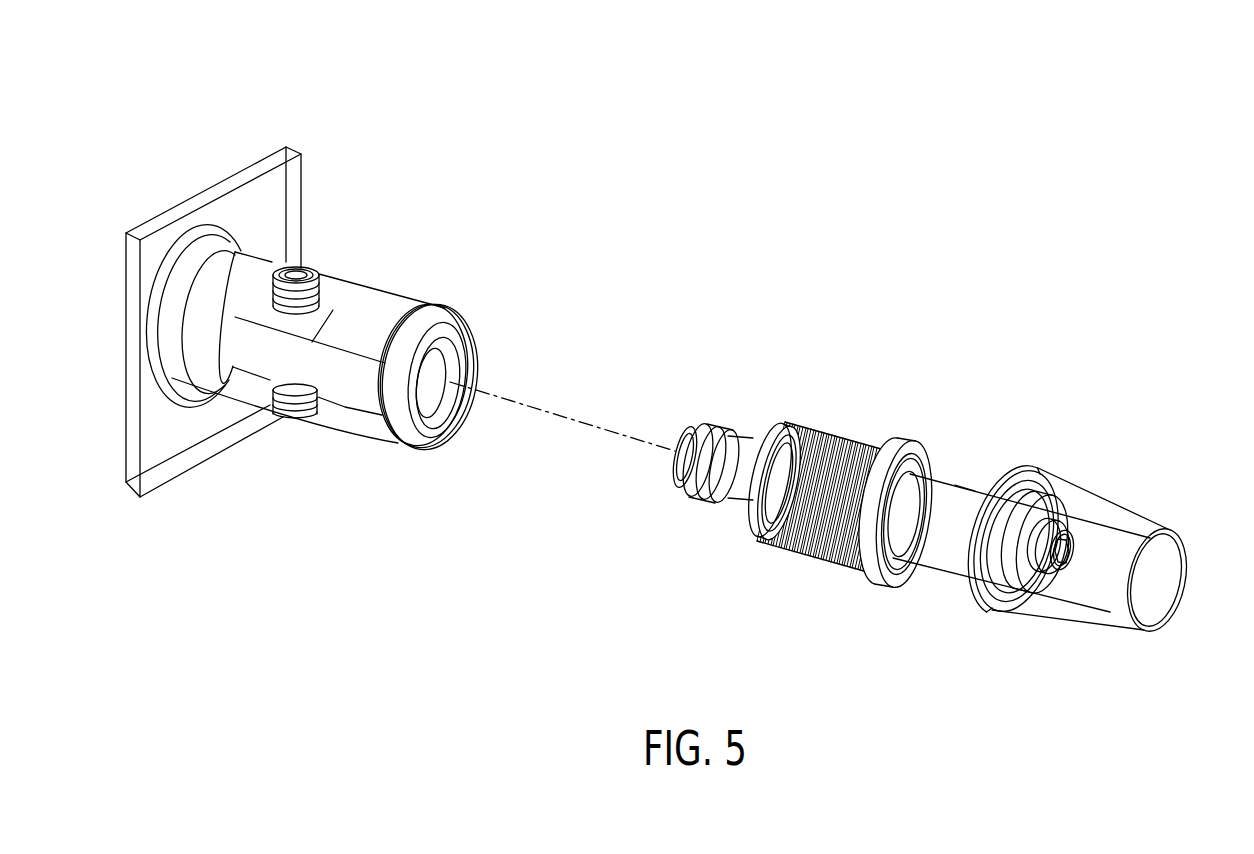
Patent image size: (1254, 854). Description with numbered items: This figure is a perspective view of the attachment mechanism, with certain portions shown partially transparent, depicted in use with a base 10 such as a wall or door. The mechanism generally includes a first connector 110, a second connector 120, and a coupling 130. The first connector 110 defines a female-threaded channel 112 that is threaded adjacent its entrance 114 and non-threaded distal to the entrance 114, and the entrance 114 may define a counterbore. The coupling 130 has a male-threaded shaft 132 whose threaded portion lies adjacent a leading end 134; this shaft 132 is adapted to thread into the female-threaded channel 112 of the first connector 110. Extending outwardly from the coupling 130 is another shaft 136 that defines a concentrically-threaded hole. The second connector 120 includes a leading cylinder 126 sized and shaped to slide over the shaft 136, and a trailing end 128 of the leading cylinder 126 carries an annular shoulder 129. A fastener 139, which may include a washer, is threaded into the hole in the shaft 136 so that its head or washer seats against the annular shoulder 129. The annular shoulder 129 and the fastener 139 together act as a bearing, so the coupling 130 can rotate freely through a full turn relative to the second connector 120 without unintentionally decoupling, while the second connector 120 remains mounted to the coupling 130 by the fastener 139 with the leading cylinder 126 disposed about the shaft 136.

The base 10 is at (258, 190).
The first connector 110 is at (380, 222).
The female-threaded channel 112 is at (443, 383).
The entrance 114 is at (438, 422).
The second connector 120 is at (1160, 585).
The leading cylinder 126 is at (963, 485).
The trailing end 128 is at (988, 593).
The annular shoulder 129 is at (1035, 476).
The coupling 130 is at (878, 395).
The male-threaded shaft 132 is at (745, 445).
The leading end 134 is at (690, 433).
The shaft 136 is at (953, 533).
The fastener 139 is at (1063, 545).